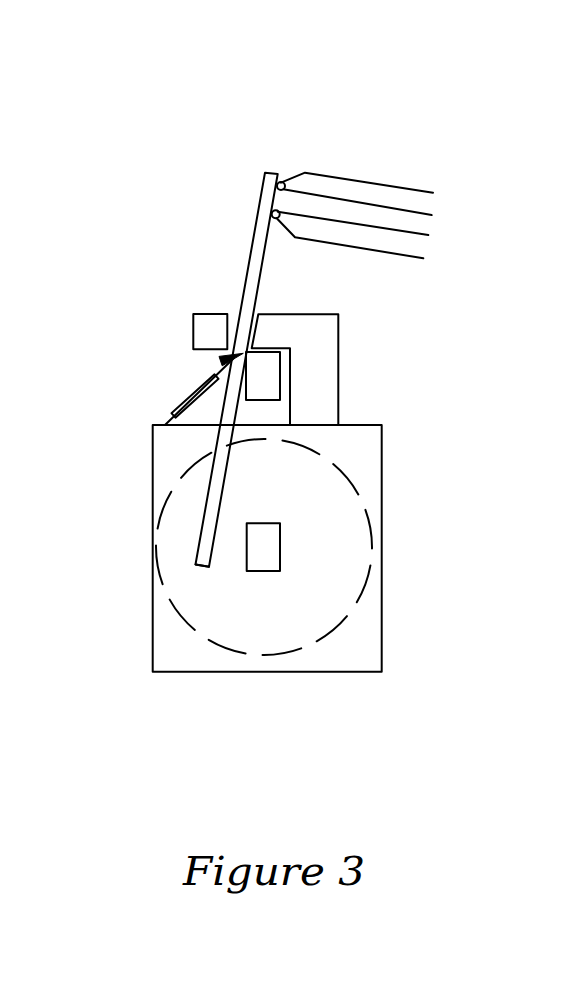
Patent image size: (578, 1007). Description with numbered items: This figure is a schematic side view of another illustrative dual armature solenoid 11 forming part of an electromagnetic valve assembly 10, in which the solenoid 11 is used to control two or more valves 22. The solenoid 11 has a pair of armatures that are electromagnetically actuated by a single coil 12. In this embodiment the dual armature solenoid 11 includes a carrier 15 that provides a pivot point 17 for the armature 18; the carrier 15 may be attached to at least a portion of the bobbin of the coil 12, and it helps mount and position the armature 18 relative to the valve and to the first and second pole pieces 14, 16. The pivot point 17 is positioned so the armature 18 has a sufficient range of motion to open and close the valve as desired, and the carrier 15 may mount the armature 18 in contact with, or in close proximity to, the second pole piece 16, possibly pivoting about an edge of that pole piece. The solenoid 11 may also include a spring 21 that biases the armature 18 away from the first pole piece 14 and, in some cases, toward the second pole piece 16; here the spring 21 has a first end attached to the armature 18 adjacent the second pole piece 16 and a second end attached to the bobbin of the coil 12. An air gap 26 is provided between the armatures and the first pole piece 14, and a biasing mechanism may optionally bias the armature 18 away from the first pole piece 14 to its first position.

The electromagnetic valve assembly 10 is at (449, 93).
The dual armature solenoid 11 is at (457, 332).
The coil 12 is at (337, 487).
The first pole piece 14 is at (275, 547).
The carrier 15 is at (330, 338).
The second pole piece 16 is at (275, 376).
The pivot point 17 is at (221, 361).
The armature 18 is at (257, 256).
The spring 21 is at (185, 402).
The valve 22 is at (372, 242).
The air gap 26 is at (228, 548).